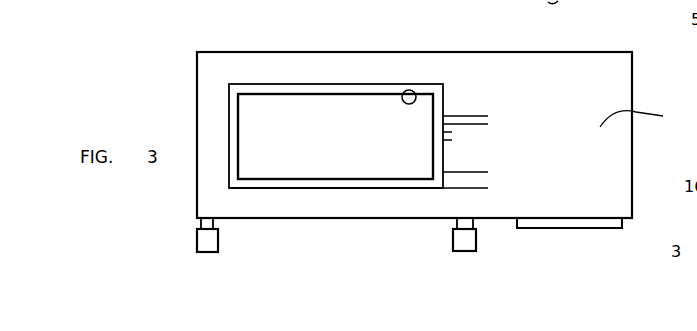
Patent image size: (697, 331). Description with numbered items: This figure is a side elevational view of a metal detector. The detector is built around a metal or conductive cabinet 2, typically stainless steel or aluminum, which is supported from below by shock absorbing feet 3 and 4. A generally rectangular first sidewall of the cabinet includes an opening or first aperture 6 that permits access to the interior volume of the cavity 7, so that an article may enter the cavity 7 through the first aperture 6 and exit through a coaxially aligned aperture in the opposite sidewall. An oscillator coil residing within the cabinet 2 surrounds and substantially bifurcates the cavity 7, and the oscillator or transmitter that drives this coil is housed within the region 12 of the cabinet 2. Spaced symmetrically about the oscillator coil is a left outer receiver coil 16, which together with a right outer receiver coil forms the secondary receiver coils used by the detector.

The cabinet 2 is at (213, 67).
The shock absorbing foot 3 is at (467, 241).
The shock absorbing foot 4 is at (207, 242).
The first aperture 6 is at (417, 97).
The cavity 7 is at (326, 118).
The region 12 is at (642, 117).
The left outer receiver coil 16 is at (261, 190).